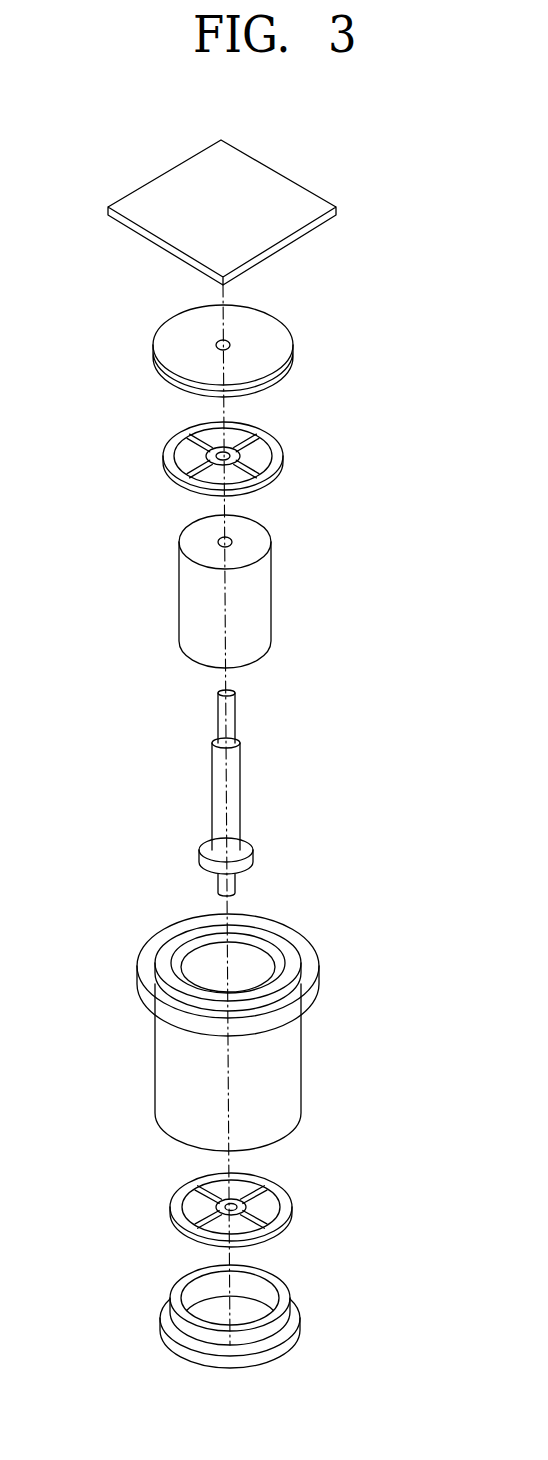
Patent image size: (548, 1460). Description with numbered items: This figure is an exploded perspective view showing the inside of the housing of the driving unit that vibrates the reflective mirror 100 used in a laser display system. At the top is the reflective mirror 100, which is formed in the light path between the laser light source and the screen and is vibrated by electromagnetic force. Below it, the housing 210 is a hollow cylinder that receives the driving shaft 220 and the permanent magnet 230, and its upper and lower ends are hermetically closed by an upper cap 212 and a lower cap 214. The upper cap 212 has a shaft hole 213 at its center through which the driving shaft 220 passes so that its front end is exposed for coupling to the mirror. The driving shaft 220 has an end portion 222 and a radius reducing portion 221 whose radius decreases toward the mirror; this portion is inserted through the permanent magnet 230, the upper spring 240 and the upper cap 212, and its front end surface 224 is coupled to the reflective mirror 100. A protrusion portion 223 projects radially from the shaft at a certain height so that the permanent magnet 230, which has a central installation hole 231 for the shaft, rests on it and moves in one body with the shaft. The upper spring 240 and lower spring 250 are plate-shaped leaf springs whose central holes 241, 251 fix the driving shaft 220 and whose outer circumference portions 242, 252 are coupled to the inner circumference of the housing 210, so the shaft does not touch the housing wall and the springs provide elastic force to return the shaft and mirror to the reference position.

The reflective mirror 100 is at (310, 202).
The housing 210 is at (293, 1072).
The upper cap 212 is at (268, 325).
The shaft hole 213 is at (230, 345).
The lower cap 214 is at (278, 1293).
The driving shaft 220 is at (220, 790).
The radius reducing portion 221 is at (223, 713).
The end portion 222 is at (218, 748).
The protrusion portion 223 is at (208, 850).
The front end surface 224 is at (220, 693).
The permanent magnet 230 is at (262, 580).
The installation hole 231 is at (233, 538).
The upper spring 240 is at (229, 440).
The central hole 241 is at (233, 457).
The outer circumference portion 242 is at (167, 467).
The lower spring 250 is at (233, 1193).
The central hole 251 is at (237, 1210).
The outer circumference portion 252 is at (178, 1217).